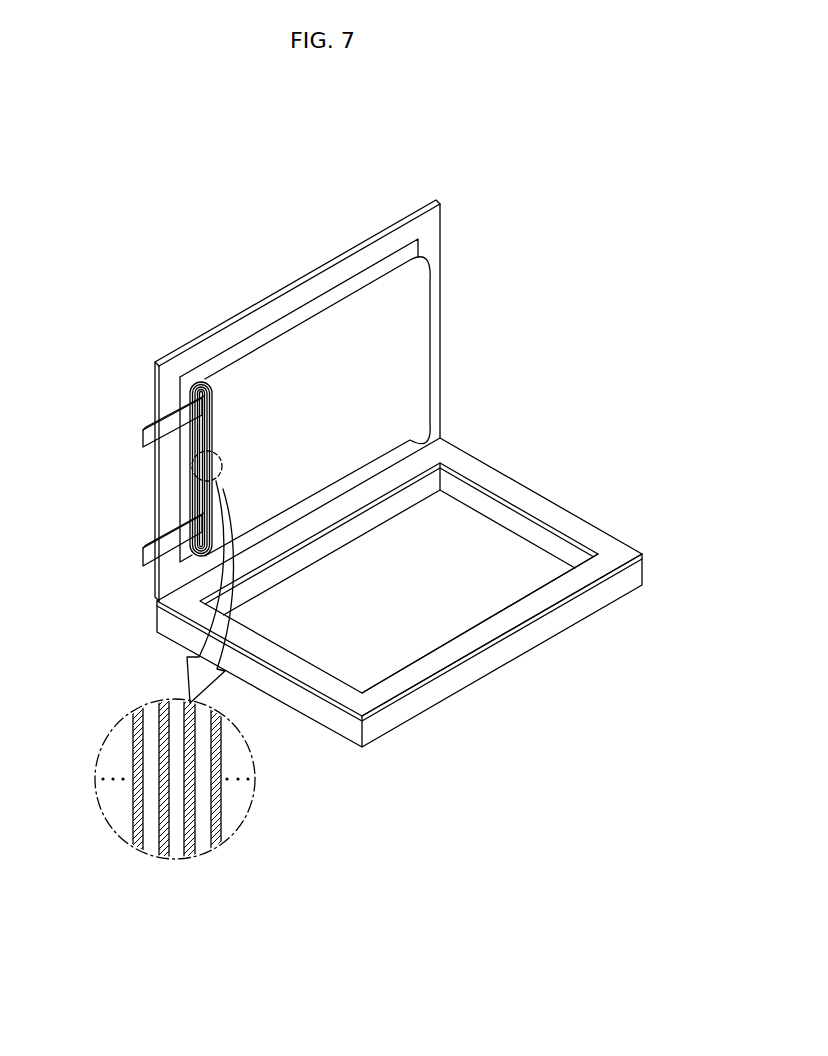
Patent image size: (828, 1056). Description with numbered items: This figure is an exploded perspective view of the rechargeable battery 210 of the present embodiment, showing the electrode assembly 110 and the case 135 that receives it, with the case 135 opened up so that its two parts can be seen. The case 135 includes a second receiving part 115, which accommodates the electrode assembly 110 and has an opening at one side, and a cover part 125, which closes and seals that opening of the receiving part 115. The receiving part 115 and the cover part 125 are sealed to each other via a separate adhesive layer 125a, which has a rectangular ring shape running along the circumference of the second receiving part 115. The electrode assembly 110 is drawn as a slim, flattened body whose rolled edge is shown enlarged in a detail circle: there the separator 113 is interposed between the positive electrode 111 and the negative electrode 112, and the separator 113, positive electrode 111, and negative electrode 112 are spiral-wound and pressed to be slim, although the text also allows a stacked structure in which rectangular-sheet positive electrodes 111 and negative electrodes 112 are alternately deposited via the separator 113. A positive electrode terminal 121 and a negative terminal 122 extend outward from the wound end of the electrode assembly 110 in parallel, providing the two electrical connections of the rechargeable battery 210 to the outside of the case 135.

The rechargeable battery 210 is at (291, 208).
The electrode assembly 110 is at (436, 306).
The positive electrode 111 is at (177, 853).
The negative electrode 112 is at (203, 848).
The separator 113 is at (140, 847).
The second receiving part 115 is at (640, 572).
The cover part 125 is at (436, 385).
The adhesive layer 125a is at (495, 632).
The case 135 is at (630, 450).
The positive electrode terminal 121 is at (143, 440).
The negative terminal 122 is at (143, 560).